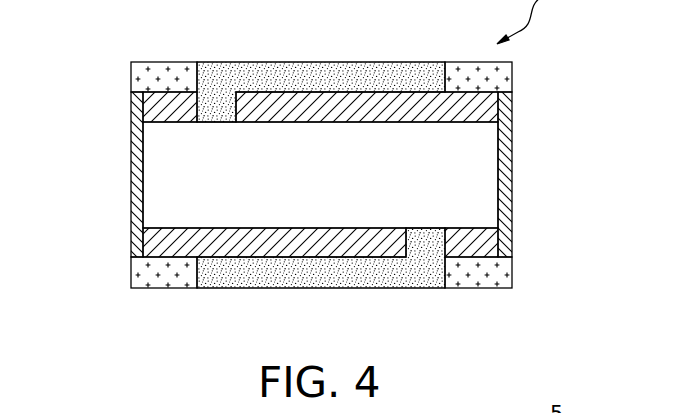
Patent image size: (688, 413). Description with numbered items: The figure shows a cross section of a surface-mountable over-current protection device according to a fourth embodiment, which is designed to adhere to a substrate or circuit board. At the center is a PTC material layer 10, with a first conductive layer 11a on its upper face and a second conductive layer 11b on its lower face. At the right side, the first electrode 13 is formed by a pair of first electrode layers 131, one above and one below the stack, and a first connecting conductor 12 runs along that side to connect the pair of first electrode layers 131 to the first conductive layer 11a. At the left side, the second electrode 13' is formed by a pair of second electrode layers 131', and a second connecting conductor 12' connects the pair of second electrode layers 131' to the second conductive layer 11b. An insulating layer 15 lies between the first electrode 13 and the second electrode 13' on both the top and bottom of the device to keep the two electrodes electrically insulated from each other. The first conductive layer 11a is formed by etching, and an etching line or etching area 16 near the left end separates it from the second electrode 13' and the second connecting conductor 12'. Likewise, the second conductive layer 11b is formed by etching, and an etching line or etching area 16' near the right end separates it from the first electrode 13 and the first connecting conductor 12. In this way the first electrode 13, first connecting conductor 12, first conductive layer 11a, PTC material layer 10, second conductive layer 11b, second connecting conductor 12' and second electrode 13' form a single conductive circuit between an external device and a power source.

The PTC material layer 10 is at (482, 153).
The first connecting conductor 12 is at (538, 174).
The second connecting conductor 12' is at (106, 174).
The first conductive layer 11a is at (389, 107).
The second conductive layer 11b is at (265, 250).
The insulating layer 15 is at (321, 178).
The etching line or etching area 16 is at (219, 63).
The etching line or etching area 16' is at (425, 290).
The first electrode 13 is at (478, 304).
The second electrode 13' is at (164, 304).
The first electrode layers 131 is at (518, 207).
The second electrode layers 131' is at (125, 207).